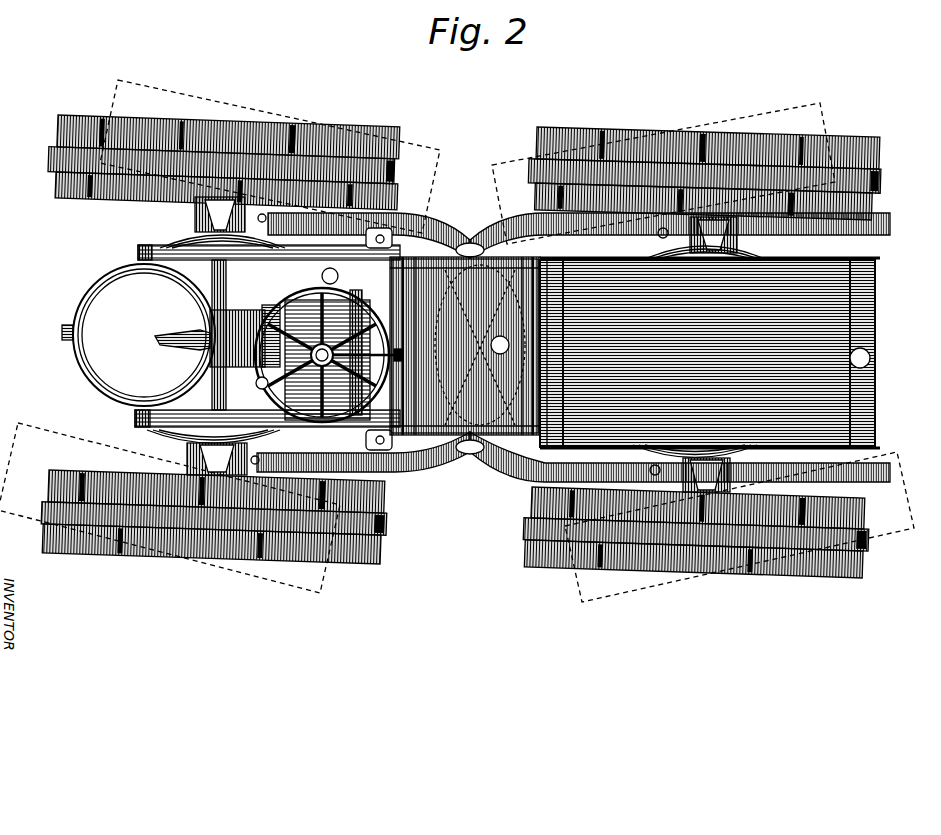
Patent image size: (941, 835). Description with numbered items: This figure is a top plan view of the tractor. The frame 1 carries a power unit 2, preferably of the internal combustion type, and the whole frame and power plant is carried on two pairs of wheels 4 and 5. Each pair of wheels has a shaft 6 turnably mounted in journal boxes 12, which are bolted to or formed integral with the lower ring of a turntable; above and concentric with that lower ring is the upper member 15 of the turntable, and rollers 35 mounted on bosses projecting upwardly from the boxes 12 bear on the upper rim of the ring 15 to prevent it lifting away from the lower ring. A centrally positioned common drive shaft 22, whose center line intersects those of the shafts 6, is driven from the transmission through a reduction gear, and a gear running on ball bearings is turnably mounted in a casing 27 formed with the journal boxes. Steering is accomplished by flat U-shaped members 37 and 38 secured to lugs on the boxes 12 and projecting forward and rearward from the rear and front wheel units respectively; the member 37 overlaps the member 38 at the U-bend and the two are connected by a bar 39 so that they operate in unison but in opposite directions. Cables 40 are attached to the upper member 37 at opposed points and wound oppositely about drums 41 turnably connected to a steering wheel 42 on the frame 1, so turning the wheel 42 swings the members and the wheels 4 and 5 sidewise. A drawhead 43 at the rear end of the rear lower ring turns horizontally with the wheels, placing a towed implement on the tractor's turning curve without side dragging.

The frame 1 is at (133, 420).
The power unit 2 is at (822, 330).
The wheels 4 is at (610, 125).
The wheels 5 is at (268, 130).
The shaft 6 is at (215, 390).
The journal boxes 12 is at (200, 215).
The upper member of the turntable 15 is at (790, 258).
The common drive shaft 22 is at (367, 313).
The casing 27 is at (249, 310).
The rollers 35 is at (178, 237).
The U-shaped member 37 is at (412, 213).
The U-shaped member 38 is at (518, 232).
The bar 39 is at (437, 455).
The cables 40 is at (470, 245).
The drums 41 is at (368, 420).
The steering wheel 42 is at (255, 338).
The drawhead 43 is at (63, 336).